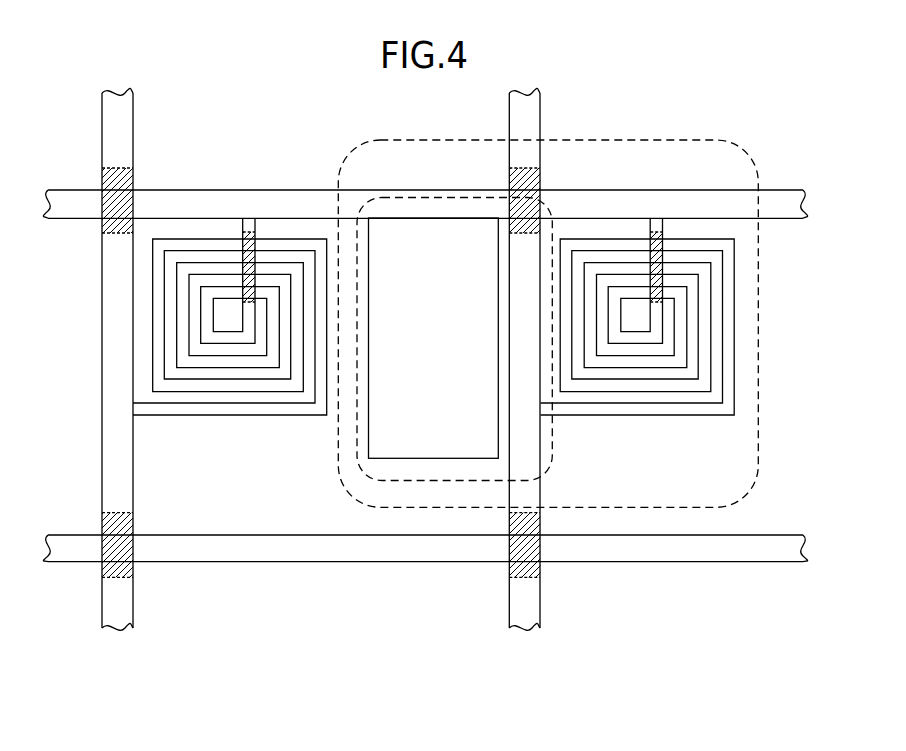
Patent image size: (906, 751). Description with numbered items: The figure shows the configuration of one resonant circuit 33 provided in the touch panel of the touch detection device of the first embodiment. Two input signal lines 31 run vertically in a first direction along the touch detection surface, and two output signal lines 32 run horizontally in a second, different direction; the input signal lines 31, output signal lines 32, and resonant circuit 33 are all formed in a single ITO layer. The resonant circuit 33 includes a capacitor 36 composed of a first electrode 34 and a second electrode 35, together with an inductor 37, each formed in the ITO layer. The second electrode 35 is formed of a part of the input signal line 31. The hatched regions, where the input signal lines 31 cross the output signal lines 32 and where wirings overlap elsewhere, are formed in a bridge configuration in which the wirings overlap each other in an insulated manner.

The input signal line 31 is at (133, 123).
The output signal line 32 is at (70, 190).
The resonant circuit 33 is at (357, 498).
The first electrode 34 is at (368, 413).
The second electrode 35 is at (541, 449).
The capacitor 36 is at (355, 450).
The inductor 37 is at (712, 416).